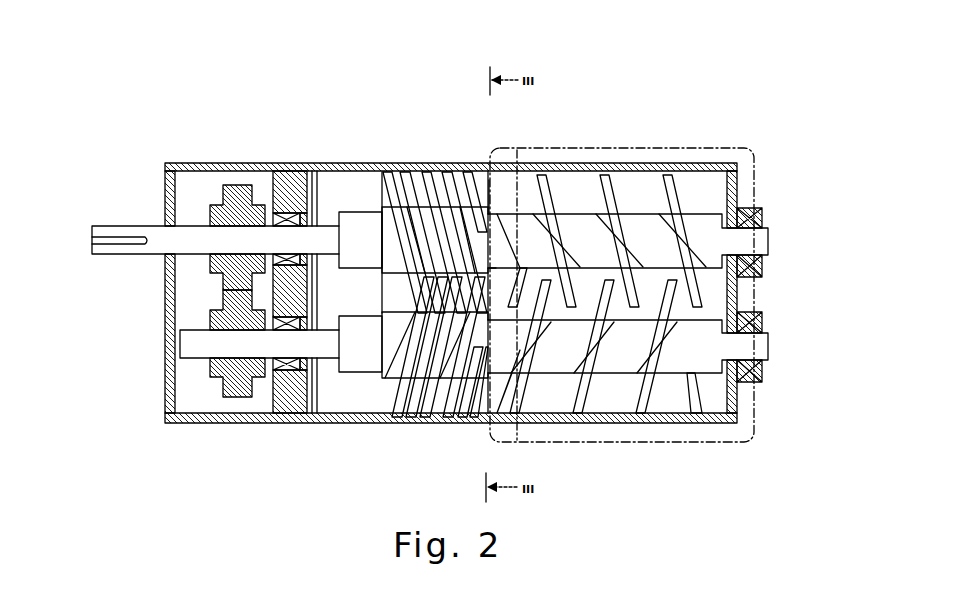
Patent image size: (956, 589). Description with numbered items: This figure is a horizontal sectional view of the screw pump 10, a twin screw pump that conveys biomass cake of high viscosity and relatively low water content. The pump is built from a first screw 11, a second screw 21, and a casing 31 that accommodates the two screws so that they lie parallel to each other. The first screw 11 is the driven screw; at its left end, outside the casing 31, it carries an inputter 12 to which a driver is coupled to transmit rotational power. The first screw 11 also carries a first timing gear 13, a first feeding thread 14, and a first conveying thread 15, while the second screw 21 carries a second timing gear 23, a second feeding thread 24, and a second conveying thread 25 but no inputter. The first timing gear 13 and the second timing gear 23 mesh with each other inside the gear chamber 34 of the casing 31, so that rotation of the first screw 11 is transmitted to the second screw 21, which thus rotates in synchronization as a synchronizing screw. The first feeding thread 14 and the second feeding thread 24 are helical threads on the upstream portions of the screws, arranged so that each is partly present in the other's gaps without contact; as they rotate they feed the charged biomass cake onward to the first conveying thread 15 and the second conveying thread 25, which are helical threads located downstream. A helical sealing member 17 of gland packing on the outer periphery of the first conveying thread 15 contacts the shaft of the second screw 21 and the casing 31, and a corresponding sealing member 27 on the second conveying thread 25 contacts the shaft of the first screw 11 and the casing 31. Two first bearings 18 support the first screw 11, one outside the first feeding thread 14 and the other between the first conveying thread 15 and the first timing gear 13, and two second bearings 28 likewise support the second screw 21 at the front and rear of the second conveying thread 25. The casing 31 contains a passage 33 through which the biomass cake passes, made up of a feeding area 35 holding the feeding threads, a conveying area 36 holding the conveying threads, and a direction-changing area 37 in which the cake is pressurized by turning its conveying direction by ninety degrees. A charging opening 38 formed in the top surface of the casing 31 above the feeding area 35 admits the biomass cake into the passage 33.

The screw pump 10 is at (326, 92).
The first screw 11 is at (131, 225).
The inputter 12 is at (131, 255).
The first timing gear 13 is at (240, 185).
The first feeding thread 14 is at (652, 167).
The first conveying thread 15 is at (460, 167).
The sealing member 17 is at (433, 167).
The first bearing 18 is at (288, 212).
The second screw 21 is at (180, 347).
The second timing gear 23 is at (240, 398).
The second feeding thread 24 is at (658, 414).
The second conveying thread 25 is at (427, 400).
The sealing member 27 is at (403, 420).
The second bearing 28 is at (281, 420).
The casing 31 is at (608, 158).
The passage 33 is at (713, 203).
The gear chamber 34 is at (200, 200).
The feeding area 35 is at (568, 167).
The conveying area 36 is at (472, 167).
The direction-changing area 37 is at (325, 190).
The charging opening 38 is at (713, 148).